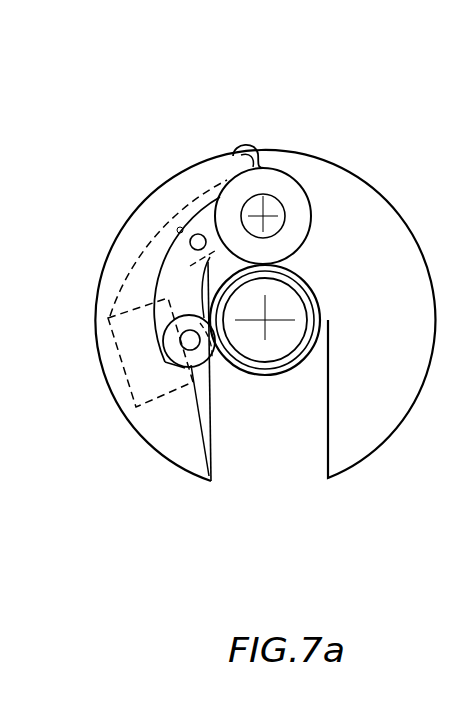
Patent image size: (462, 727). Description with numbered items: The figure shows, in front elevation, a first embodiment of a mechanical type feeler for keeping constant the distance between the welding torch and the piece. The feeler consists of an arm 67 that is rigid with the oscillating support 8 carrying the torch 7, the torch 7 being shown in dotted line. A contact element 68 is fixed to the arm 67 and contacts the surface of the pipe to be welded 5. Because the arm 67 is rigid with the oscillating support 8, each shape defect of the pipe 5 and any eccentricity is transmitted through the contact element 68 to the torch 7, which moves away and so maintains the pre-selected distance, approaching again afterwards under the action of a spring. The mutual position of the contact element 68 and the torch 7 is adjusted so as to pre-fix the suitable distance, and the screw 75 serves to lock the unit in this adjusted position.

The pipe to be welded 5 is at (307, 300).
The torch 7 is at (145, 392).
The oscillating support 8 is at (150, 234).
The arm 67 is at (187, 285).
The contact element 68 is at (198, 358).
The screw 75 is at (198, 242).